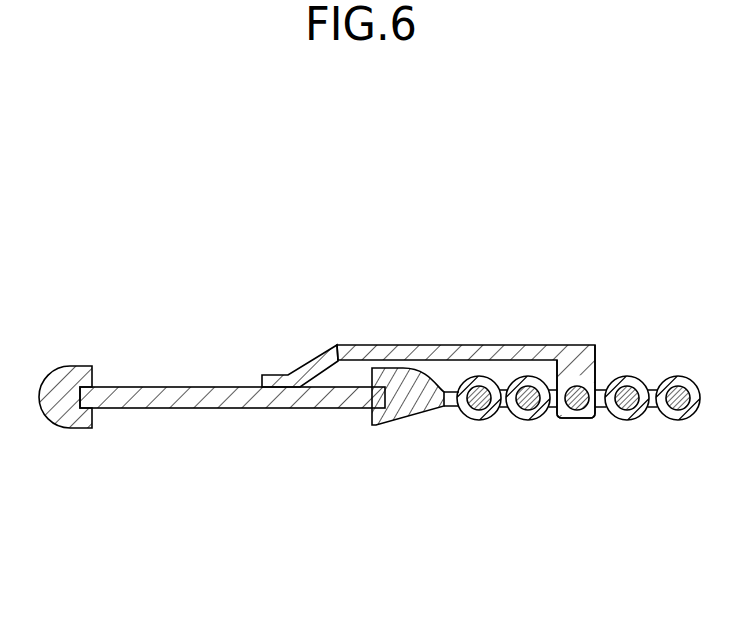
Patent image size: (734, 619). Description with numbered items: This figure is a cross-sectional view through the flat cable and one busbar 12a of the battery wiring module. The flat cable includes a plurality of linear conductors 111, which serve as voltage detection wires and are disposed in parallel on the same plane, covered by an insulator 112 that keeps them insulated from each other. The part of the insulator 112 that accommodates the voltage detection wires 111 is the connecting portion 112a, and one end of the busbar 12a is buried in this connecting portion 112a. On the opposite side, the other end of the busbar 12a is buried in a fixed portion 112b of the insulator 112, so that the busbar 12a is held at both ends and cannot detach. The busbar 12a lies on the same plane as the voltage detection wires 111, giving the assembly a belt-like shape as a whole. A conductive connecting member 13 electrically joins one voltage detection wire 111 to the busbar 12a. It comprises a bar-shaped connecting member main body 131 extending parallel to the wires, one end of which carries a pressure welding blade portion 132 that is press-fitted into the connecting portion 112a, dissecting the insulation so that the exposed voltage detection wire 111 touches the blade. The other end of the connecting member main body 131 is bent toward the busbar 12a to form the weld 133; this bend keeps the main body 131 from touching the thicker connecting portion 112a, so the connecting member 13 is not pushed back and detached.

The connecting member 13 is at (466, 311).
The connecting member main body 131 is at (437, 345).
The pressure welding blade portion 132 is at (577, 347).
The weld 133 is at (292, 375).
The linear conductors 111 is at (670, 418).
The insulator 112 is at (237, 480).
The connecting portion 112a is at (417, 420).
The fixed portion 112b is at (58, 428).
The busbar 12a is at (220, 408).